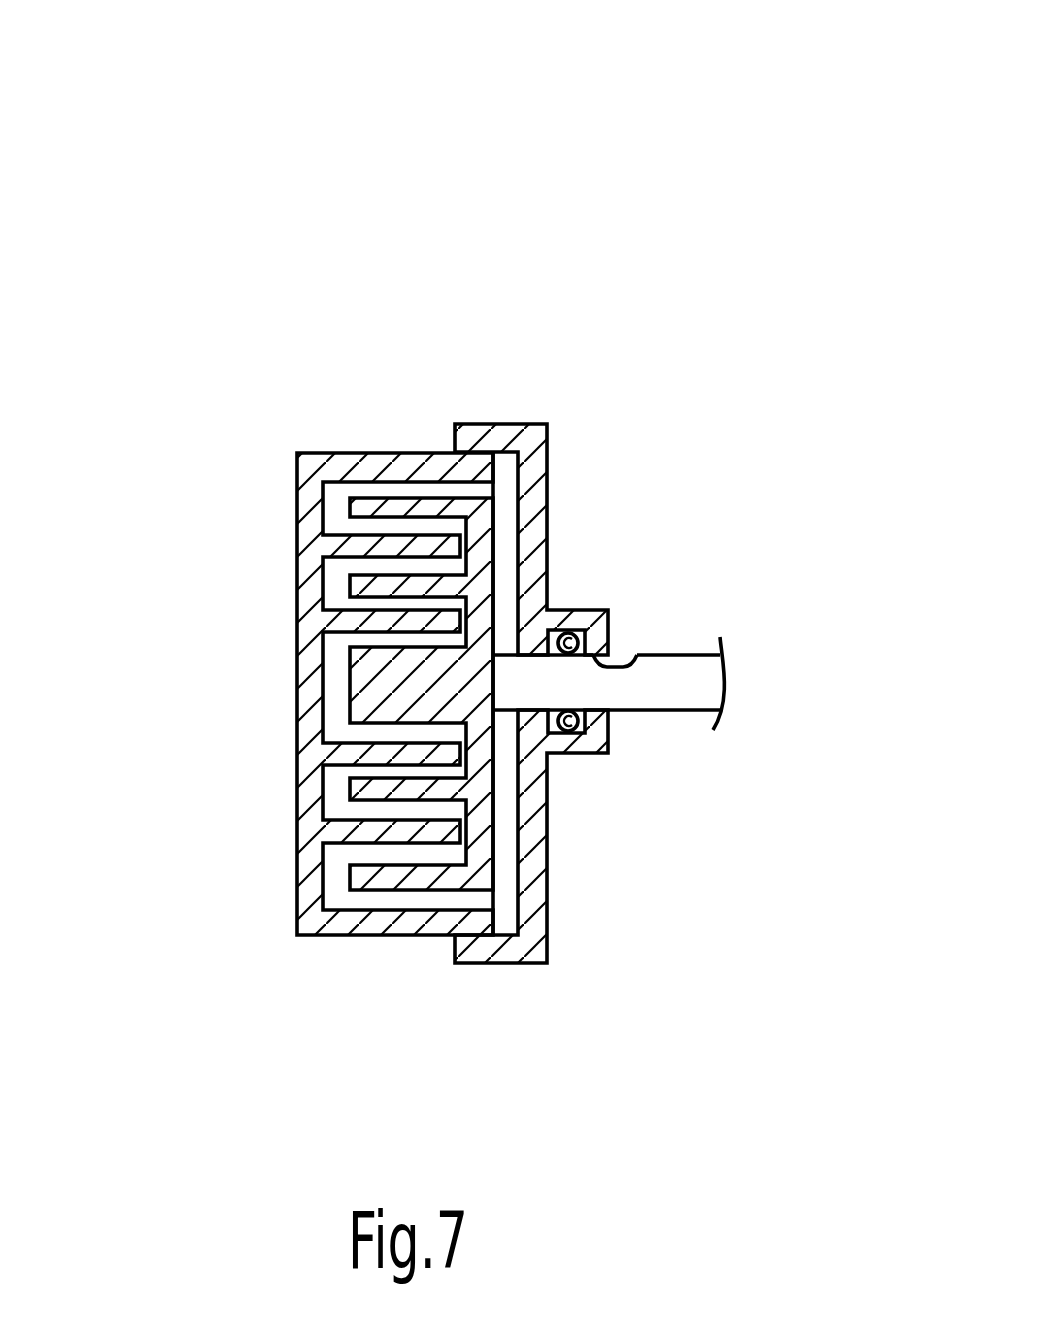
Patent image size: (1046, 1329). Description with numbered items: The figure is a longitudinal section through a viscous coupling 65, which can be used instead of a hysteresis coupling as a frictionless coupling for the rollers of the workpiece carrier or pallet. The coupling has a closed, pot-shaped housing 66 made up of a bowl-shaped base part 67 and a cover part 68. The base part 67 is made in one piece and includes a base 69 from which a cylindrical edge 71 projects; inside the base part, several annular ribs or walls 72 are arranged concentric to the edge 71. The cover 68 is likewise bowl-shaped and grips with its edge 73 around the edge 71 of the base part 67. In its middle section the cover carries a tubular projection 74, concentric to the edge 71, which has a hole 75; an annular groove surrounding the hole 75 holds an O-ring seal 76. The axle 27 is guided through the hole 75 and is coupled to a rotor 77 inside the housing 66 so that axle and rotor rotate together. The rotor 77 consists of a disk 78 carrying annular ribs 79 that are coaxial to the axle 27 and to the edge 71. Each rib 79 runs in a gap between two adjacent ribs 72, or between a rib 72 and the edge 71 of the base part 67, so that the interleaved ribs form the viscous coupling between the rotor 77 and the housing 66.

The axle 27 is at (682, 690).
The coupling 65 is at (583, 192).
The housing 66 is at (343, 393).
The bowl-shaped base part 67 is at (343, 940).
The cover part 68 is at (528, 932).
The base 69 is at (297, 724).
The edge 71 is at (392, 453).
The annular ribs 72 is at (377, 618).
The edge 73 is at (492, 963).
The tubular projection 74 is at (568, 633).
The hole 75 is at (635, 662).
The O-ring seal 76 is at (593, 755).
The rotor 77 is at (493, 550).
The disk 78 is at (483, 840).
The annular ribs 79 is at (398, 880).